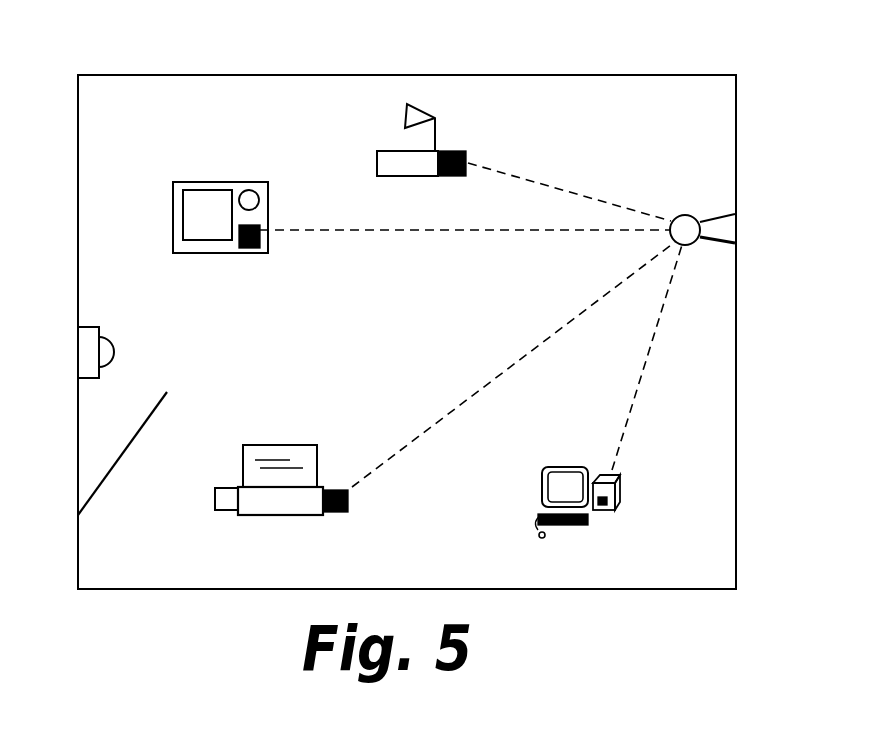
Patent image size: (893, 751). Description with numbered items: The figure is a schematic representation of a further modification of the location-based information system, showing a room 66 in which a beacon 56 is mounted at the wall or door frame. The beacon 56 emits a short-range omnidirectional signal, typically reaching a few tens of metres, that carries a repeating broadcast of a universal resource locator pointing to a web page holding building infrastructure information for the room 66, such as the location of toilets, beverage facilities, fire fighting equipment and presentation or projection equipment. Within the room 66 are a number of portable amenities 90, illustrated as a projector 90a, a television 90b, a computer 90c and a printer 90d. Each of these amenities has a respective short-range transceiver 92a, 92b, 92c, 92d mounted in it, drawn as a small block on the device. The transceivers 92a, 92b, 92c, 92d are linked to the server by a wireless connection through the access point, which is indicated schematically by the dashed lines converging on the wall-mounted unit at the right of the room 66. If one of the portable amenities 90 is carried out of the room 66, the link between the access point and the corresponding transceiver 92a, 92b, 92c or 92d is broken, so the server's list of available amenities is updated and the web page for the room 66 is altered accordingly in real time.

The beacon 56 is at (85, 357).
The room 66 is at (104, 201).
The portable amenities 90 is at (264, 537).
The projector 90a is at (477, 100).
The television 90b is at (179, 149).
The computer 90c is at (661, 533).
The printer 90d is at (313, 537).
The short-range transceiver 92a is at (462, 151).
The short-range transceiver 92b is at (258, 225).
The short-range transceiver 92c is at (605, 510).
The short-range transceiver 92d is at (350, 502).